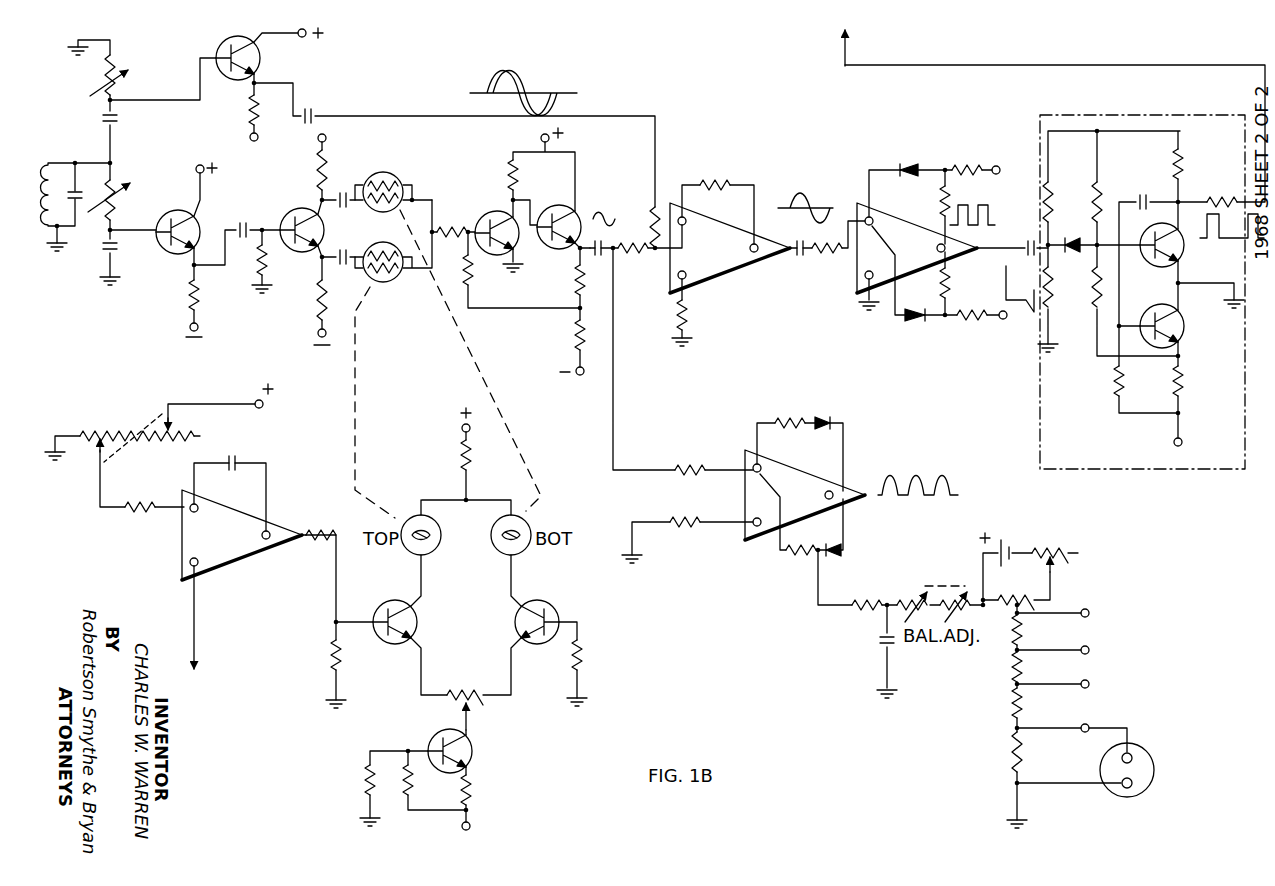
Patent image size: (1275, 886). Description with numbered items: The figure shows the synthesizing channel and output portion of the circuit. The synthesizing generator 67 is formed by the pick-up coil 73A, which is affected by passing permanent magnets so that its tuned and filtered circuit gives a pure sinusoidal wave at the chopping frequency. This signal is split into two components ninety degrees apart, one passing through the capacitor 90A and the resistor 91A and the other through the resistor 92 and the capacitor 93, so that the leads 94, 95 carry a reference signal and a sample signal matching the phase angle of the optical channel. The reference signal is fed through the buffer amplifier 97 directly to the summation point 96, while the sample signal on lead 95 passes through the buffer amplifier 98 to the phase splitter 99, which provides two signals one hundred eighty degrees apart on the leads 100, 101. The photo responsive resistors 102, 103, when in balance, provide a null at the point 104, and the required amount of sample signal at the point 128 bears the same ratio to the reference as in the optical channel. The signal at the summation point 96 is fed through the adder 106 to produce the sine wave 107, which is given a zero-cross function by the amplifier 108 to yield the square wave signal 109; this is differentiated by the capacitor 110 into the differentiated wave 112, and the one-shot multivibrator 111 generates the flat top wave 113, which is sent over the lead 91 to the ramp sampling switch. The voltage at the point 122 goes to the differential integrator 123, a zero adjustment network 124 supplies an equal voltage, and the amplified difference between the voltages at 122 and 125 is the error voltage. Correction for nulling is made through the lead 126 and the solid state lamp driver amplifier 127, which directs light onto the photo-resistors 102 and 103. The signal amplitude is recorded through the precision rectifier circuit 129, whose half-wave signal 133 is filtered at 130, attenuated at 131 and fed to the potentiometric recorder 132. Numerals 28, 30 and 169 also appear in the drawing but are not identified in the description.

The light output indicator 28 is at (943, 165).
The output driver circuit 30 is at (1151, 269).
The synthesizing generator 67 is at (97, 140).
The pick-up coil 73A is at (40, 167).
The capacitor 90A is at (115, 125).
The lead 91 is at (848, 47).
The resistor 91A is at (125, 74).
The resistor 92 is at (118, 195).
The capacitor 93 is at (104, 253).
The lead 94 is at (175, 103).
The lead 95 is at (140, 234).
The summation point 96 is at (647, 244).
The buffer amplifier 97 is at (220, 44).
The buffer amplifier 98 is at (177, 210).
The phase splitter 99 is at (299, 205).
The lead 100 is at (344, 228).
The lead 101 is at (320, 260).
The photo responsive resistor 102 is at (370, 172).
The photo responsive resistor 103 is at (390, 281).
The null point 104 is at (437, 228).
The adder 106 is at (729, 268).
The sine wave 107 is at (790, 198).
The zero-crossing amplifier 108 is at (860, 208).
The square wave signal 109 is at (1012, 239).
The capacitor 110 is at (1037, 218).
The one-shot multivibrator 111 is at (1151, 301).
The differentiated wave 112 is at (1008, 276).
The flat top wave 113 is at (1222, 242).
The point 122 is at (192, 635).
The differential integrator 123 is at (240, 552).
The zero adjustment network 124 is at (143, 409).
The point 125 is at (171, 500).
The lead 126 is at (338, 598).
The solid state lamp driver amplifier 127 is at (512, 681).
The point 128 is at (619, 256).
The precision rectifier circuit 129 is at (747, 452).
The filter 130 is at (893, 648).
The attenuator 131 is at (1100, 680).
The potentiometric recorder 132 is at (1170, 745).
The half-wave signal 133 is at (944, 472).
The resistor 169 is at (988, 175).